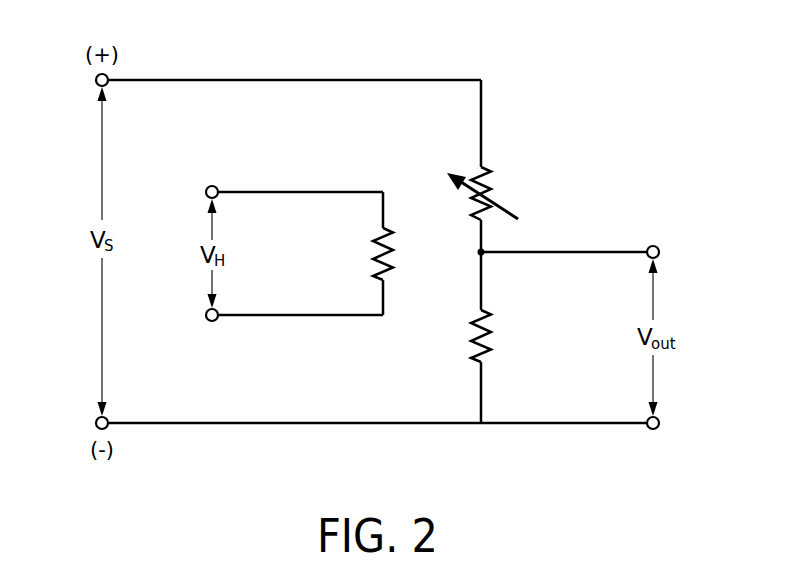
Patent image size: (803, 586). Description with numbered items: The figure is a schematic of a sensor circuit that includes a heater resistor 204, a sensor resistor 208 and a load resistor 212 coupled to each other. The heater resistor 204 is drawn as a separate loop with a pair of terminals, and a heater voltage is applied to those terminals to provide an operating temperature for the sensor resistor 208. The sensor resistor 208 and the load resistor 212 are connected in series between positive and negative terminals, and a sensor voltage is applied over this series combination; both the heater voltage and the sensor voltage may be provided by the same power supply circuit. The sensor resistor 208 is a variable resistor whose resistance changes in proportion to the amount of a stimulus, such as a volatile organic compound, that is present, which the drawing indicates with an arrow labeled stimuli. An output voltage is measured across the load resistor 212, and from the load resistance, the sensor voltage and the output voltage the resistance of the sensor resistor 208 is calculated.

The heater resistor 204 is at (373, 240).
The sensor resistor 208 is at (482, 167).
The load resistor 212 is at (490, 311).